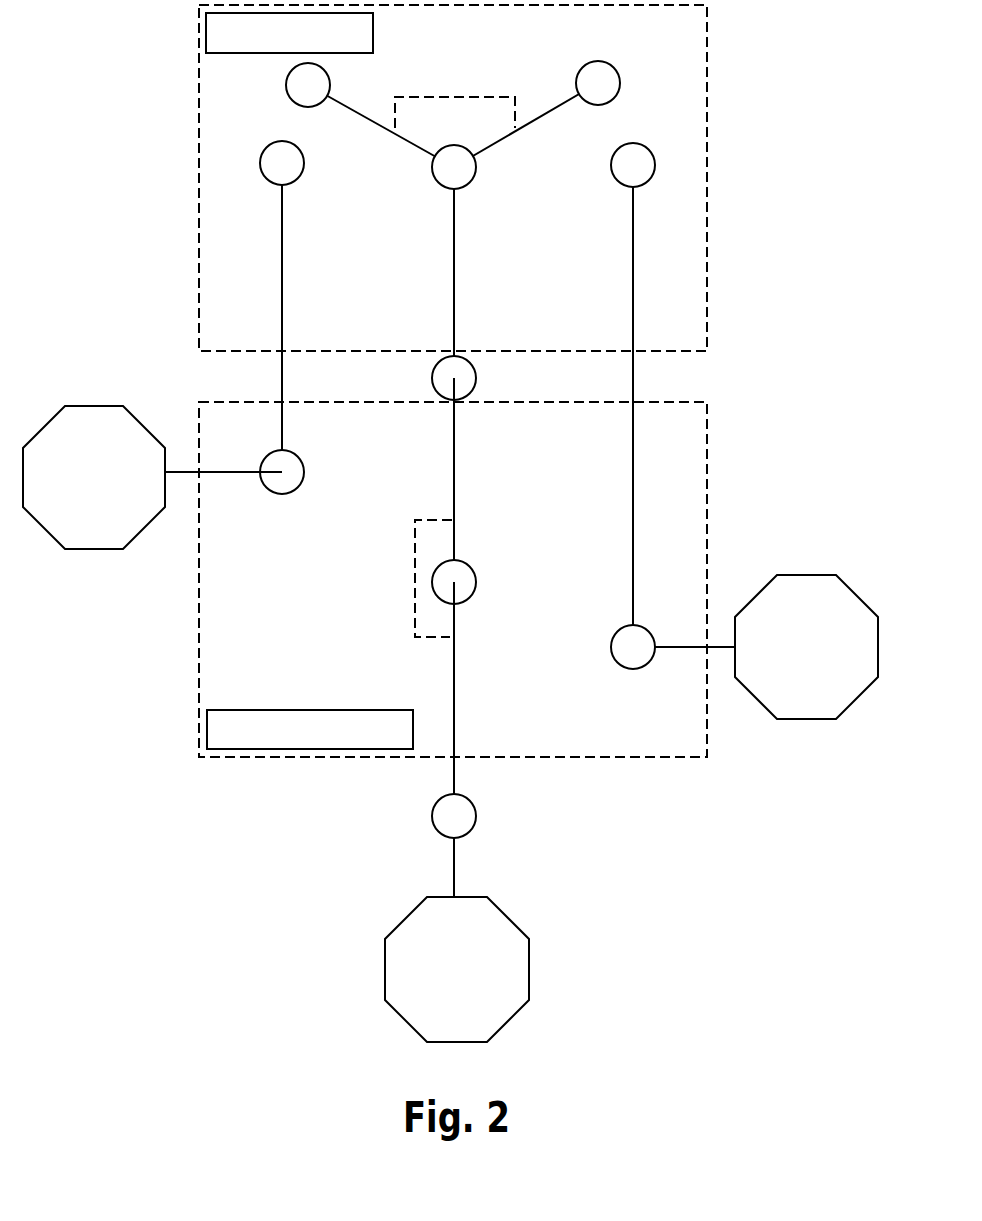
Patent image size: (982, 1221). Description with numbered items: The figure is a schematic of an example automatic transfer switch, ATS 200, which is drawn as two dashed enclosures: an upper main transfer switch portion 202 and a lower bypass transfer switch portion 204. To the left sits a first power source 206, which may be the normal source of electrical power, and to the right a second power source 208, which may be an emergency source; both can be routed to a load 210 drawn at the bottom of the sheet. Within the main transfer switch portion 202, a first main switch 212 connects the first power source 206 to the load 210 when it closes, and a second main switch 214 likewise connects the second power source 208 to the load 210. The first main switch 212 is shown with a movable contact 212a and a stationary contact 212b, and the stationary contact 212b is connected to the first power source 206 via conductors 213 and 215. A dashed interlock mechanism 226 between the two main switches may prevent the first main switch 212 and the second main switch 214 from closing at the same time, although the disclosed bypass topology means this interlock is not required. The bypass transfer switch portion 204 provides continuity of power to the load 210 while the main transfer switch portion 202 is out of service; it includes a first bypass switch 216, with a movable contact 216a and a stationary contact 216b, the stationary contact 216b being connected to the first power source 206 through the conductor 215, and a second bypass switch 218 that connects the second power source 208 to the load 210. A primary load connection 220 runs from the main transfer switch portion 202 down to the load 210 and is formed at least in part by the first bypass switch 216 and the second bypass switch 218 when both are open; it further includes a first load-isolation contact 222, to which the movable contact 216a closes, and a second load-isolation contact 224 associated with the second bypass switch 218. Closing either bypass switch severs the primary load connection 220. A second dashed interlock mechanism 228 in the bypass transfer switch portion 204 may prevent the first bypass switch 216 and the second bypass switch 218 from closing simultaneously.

The ATS 200 is at (450, 523).
The main transfer switch portion 202 is at (199, 205).
The bypass transfer switch portion 204 is at (199, 710).
The first power source 206 is at (93, 549).
The second power source 208 is at (806, 719).
The load 210 is at (385, 975).
The first main switch 212 is at (357, 116).
The movable contact 212a is at (355, 112).
The stationary contact 212b is at (302, 163).
The conductor 213 is at (282, 310).
The second main switch 214 is at (565, 92).
The conductor 215 is at (207, 472).
The first bypass switch 216 is at (396, 480).
The movable contact 216a is at (455, 450).
The stationary contact 216b is at (304, 468).
The second bypass switch 218 is at (486, 713).
The primary load connection 220 is at (478, 554).
The first load-isolation contact 222 is at (477, 376).
The second load-isolation contact 224 is at (477, 580).
The interlock mechanism 226 is at (443, 97).
The interlock mechanism 228 is at (415, 580).